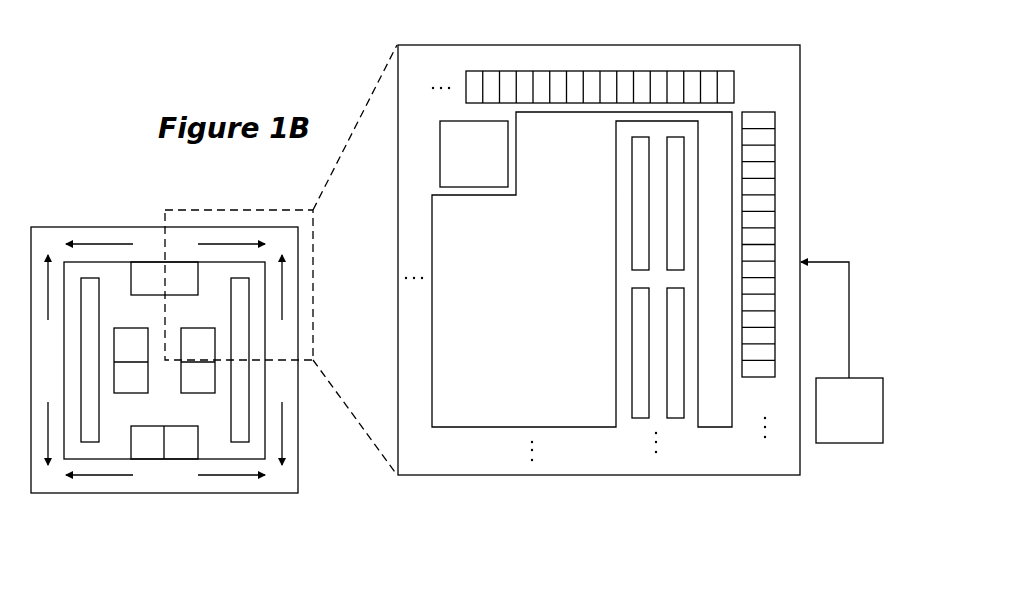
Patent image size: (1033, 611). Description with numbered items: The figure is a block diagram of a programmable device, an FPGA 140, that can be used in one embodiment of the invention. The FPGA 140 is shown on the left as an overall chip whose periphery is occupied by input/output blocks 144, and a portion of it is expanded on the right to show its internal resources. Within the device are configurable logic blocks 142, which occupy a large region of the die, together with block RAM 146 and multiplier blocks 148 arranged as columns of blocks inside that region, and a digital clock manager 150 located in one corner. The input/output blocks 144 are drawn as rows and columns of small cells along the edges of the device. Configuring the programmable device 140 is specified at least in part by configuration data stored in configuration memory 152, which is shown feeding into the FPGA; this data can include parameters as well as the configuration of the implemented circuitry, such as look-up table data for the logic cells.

The FPGA 140 is at (74, 191).
The configurable logic blocks 142 is at (462, 427).
The input/output blocks 144 is at (625, 70).
The block RAM 146 is at (640, 418).
The multiplier blocks 148 is at (675, 418).
The digital clock manager 150 is at (465, 119).
The configuration memory 152 is at (842, 352).